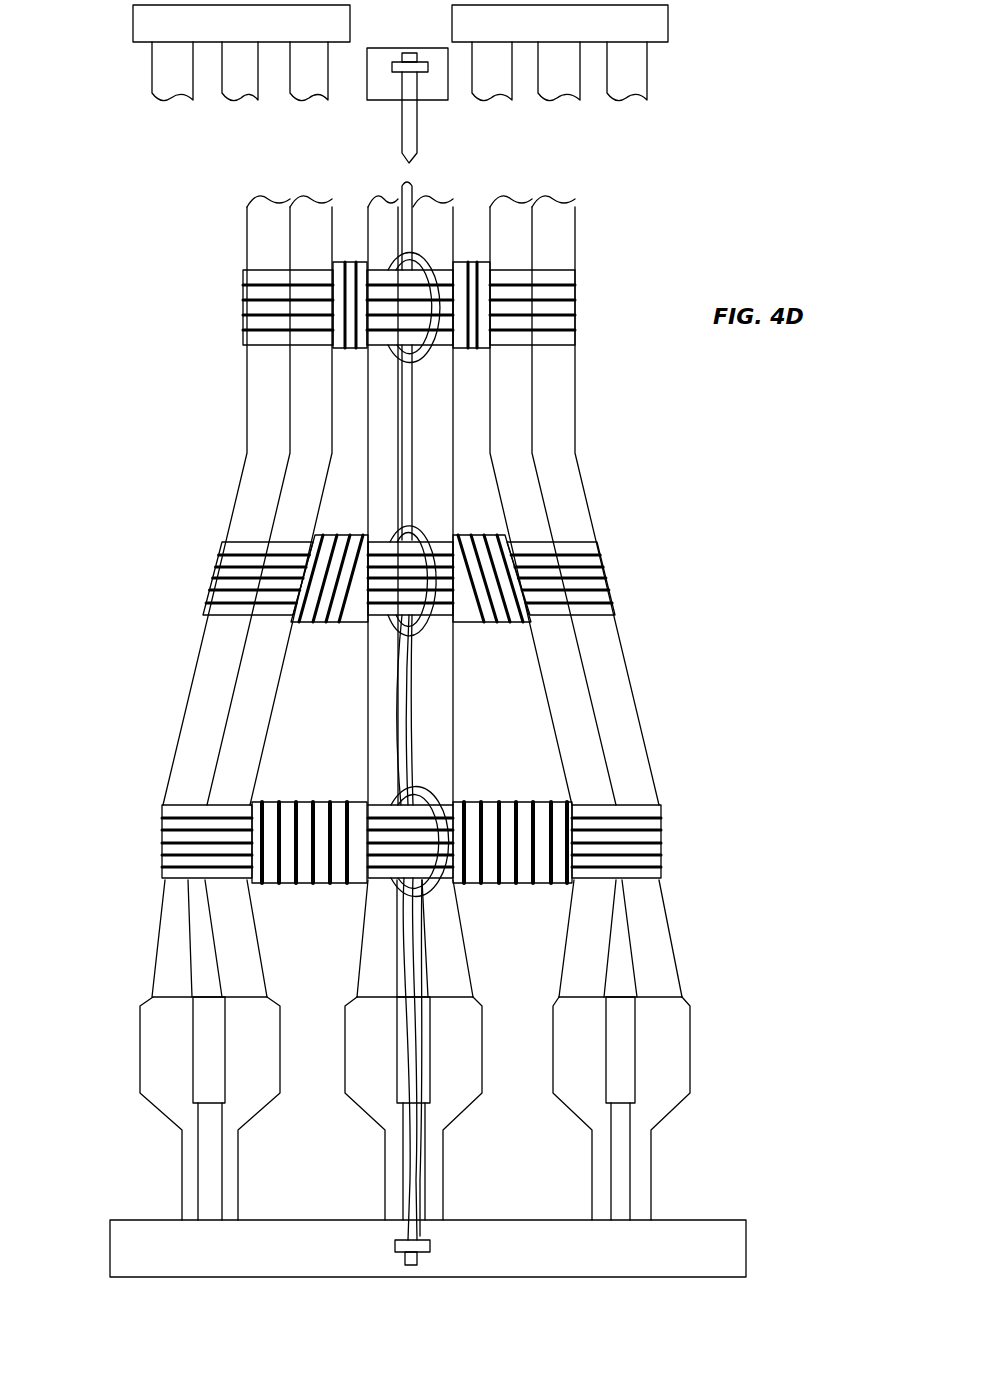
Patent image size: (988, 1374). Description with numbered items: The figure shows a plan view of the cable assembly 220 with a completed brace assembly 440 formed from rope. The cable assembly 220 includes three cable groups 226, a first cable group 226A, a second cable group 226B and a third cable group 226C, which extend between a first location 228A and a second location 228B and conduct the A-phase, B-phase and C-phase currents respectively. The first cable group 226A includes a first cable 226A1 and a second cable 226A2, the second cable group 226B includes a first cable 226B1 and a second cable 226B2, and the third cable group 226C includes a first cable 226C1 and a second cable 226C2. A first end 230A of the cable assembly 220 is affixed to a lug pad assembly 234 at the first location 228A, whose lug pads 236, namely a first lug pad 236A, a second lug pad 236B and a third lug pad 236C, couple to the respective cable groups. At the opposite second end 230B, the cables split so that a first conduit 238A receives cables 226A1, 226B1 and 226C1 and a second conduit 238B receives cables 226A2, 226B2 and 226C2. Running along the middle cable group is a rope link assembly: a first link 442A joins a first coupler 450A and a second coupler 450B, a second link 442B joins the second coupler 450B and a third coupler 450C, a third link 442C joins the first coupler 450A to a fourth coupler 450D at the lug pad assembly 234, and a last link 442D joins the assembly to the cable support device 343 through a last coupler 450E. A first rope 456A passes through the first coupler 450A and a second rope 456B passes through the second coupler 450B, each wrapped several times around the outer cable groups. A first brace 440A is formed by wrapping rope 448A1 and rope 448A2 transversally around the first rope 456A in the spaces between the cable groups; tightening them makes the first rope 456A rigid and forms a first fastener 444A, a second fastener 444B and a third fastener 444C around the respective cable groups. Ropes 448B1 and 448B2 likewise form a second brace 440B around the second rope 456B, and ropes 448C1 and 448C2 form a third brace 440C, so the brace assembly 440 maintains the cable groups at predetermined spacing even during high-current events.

The cable assembly 220 is at (698, 238).
The cable groups 226 is at (582, 461).
The first cable group 226A is at (247, 230).
The first cable 226A1 is at (150, 75).
The second cable 226A2 is at (490, 97).
The second cable group 226B is at (368, 217).
The first cable 226B1 is at (222, 100).
The second cable 226B2 is at (558, 97).
The third cable group 226C is at (577, 230).
The first cable 226C1 is at (302, 100).
The second cable 226C2 is at (648, 65).
The first location 228A is at (148, 1193).
The second location 228B is at (645, 150).
The first end 230A is at (708, 978).
The second end 230B is at (122, 52).
The lug pad assembly 234 is at (706, 1220).
The lug pads 236 is at (634, 1150).
The first lug pad 236A is at (208, 1163).
The second lug pad 236B is at (402, 1188).
The third lug pad 236C is at (620, 1155).
The first conduit 238A is at (350, 20).
The second conduit 238B is at (668, 25).
The cable support device 343 is at (422, 103).
The brace assembly 440 is at (243, 272).
The first brace 440A is at (162, 815).
The second brace 440B is at (222, 548).
The third brace 440C is at (243, 311).
The first link 442A is at (393, 720).
The second link 442B is at (397, 420).
The third link 442C is at (405, 935).
The last link 442D is at (417, 133).
The first fastener 444A is at (185, 882).
The second fastener 444B is at (380, 805).
The third fastener 444C is at (661, 820).
The rope 448A1 is at (352, 885).
The rope 448A2 is at (473, 885).
The rope 448B1 is at (352, 622).
The rope 448B2 is at (482, 533).
The rope 448C1 is at (352, 348).
The rope 448C2 is at (473, 347).
The first coupler 450A is at (432, 792).
The second coupler 450B is at (430, 628).
The third coupler 450C is at (417, 257).
The fourth coupler 450D is at (430, 1247).
The last coupler 450E is at (392, 72).
The first rope 456A is at (243, 292).
The second rope 456B is at (213, 580).